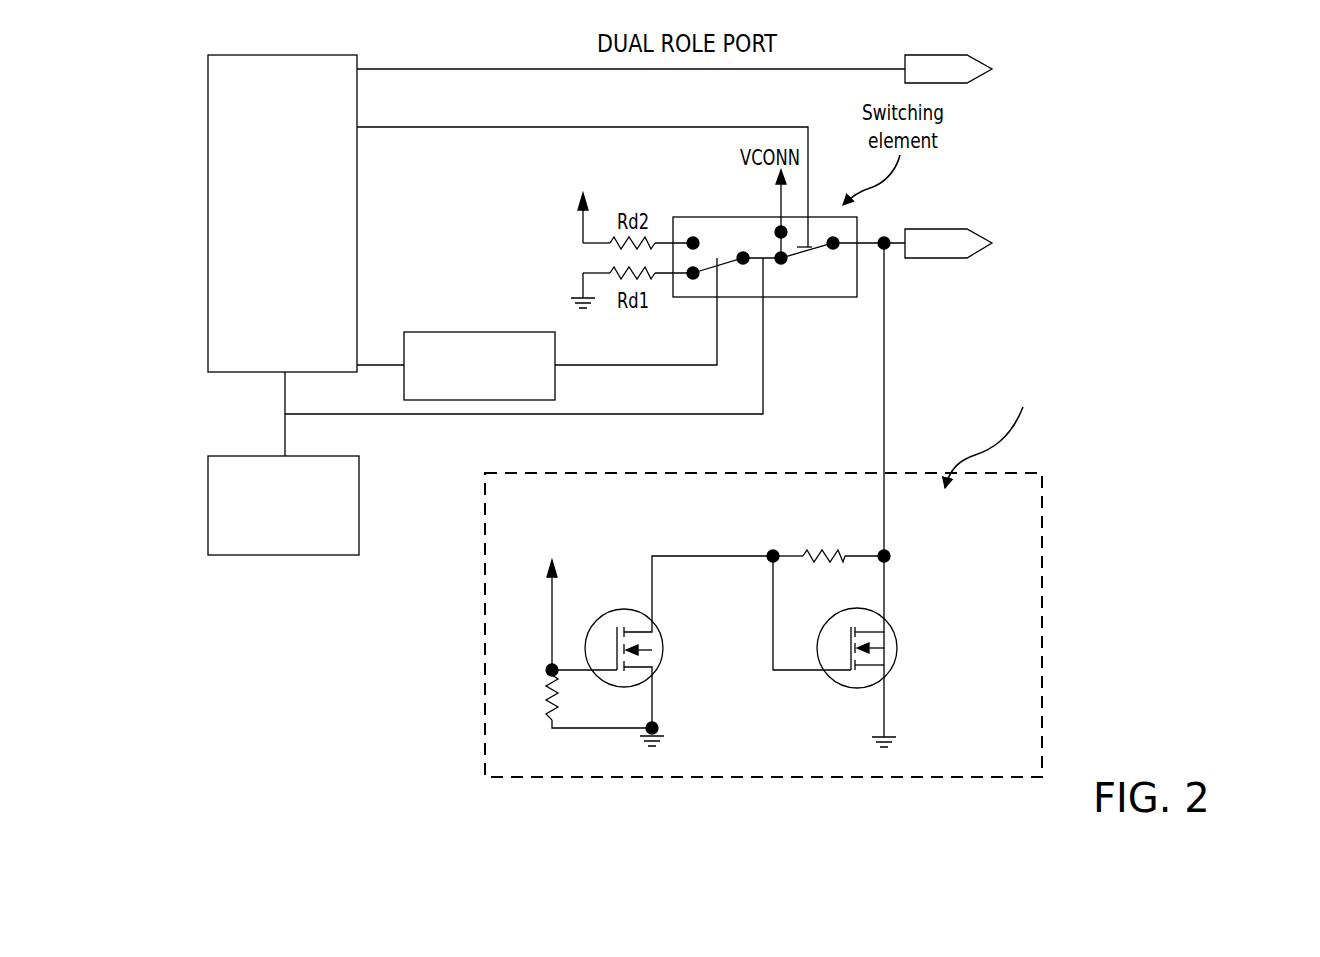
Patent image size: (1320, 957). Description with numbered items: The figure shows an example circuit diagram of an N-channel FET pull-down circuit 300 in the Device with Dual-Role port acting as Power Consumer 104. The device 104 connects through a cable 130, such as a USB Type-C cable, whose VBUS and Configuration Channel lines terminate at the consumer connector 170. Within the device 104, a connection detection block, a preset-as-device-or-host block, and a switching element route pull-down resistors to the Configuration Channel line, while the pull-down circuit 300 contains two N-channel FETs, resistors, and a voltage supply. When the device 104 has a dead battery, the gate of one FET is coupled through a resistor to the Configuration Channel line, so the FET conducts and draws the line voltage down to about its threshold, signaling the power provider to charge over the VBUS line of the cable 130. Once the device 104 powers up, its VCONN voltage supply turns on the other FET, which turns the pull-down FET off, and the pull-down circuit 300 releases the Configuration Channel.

The Device with Dual-Role port acting as Power Consumer 104 is at (352, 603).
The cable 130 is at (984, 222).
The consumer connector 170 is at (1092, 307).
The pull-down circuit 300 is at (466, 688).